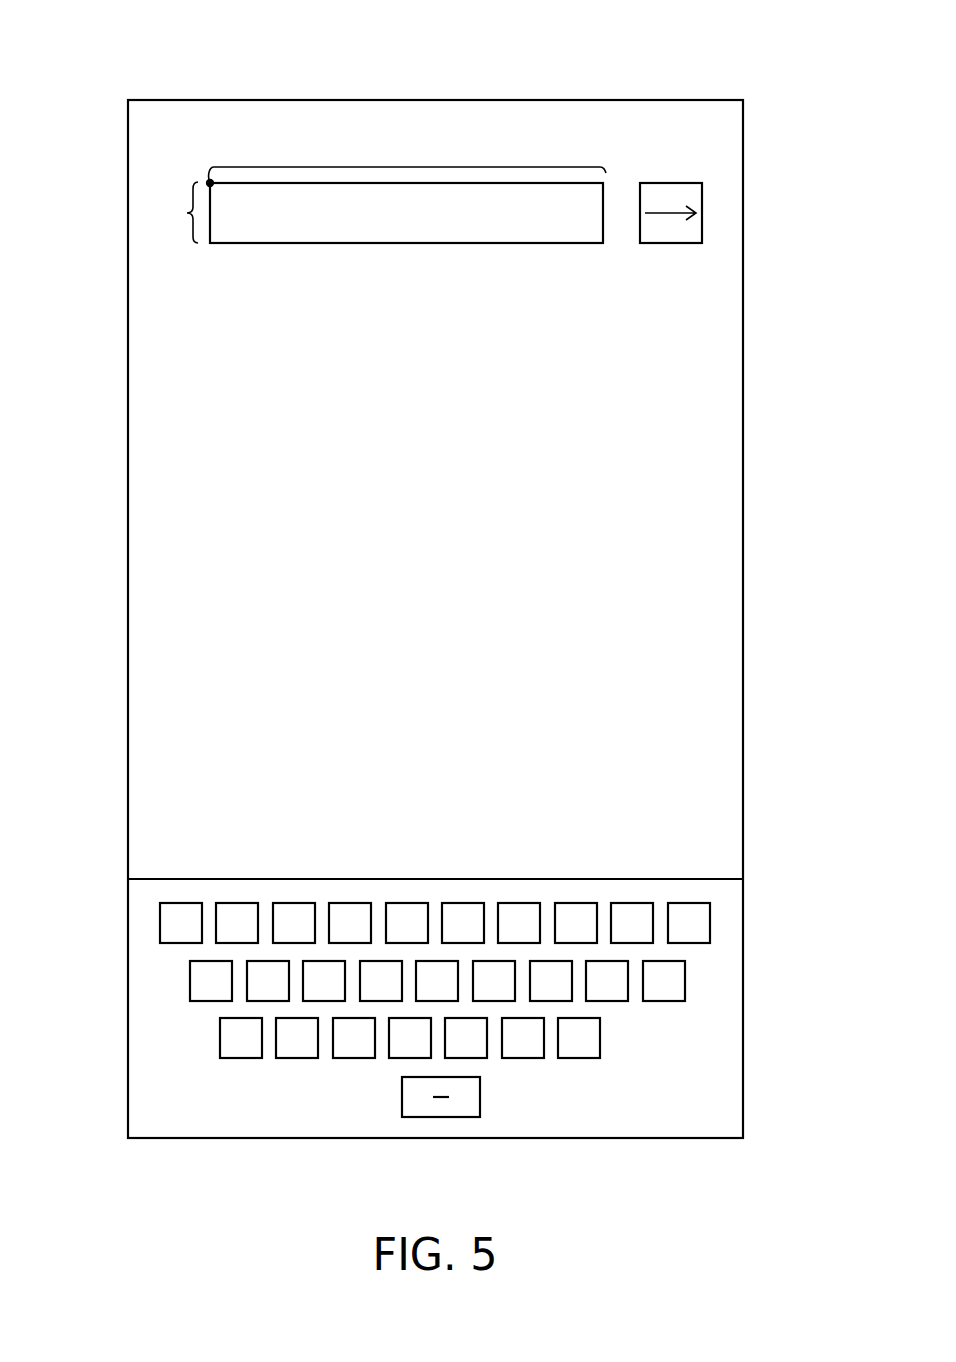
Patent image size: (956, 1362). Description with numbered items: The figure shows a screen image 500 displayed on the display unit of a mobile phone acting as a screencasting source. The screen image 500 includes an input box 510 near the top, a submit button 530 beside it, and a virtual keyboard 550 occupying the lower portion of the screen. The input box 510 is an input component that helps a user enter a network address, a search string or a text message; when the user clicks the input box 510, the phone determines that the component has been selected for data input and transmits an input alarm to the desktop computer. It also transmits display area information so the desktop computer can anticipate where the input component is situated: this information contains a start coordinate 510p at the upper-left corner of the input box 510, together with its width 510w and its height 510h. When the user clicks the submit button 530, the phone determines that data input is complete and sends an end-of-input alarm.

The screen image 500 is at (571, 100).
The input box 510 is at (290, 183).
The start coordinate 510p is at (210, 180).
The width 510w is at (405, 167).
The height 510h is at (187, 214).
The submit button 530 is at (702, 214).
The virtual keyboard 550 is at (705, 878).